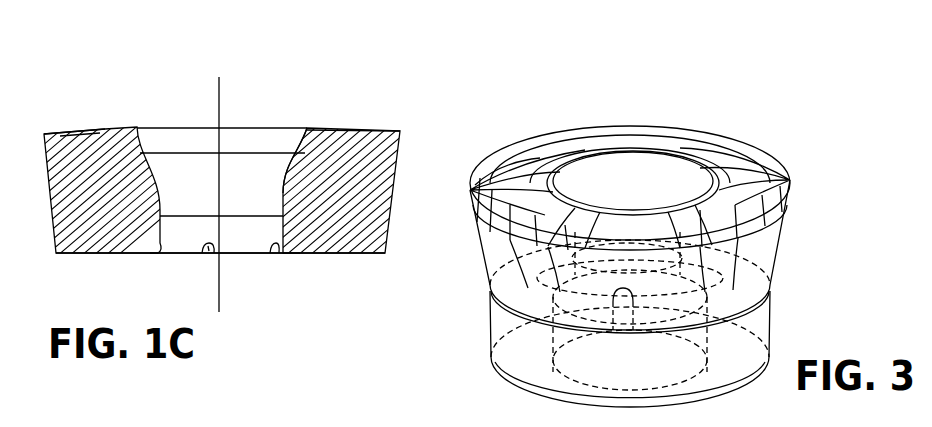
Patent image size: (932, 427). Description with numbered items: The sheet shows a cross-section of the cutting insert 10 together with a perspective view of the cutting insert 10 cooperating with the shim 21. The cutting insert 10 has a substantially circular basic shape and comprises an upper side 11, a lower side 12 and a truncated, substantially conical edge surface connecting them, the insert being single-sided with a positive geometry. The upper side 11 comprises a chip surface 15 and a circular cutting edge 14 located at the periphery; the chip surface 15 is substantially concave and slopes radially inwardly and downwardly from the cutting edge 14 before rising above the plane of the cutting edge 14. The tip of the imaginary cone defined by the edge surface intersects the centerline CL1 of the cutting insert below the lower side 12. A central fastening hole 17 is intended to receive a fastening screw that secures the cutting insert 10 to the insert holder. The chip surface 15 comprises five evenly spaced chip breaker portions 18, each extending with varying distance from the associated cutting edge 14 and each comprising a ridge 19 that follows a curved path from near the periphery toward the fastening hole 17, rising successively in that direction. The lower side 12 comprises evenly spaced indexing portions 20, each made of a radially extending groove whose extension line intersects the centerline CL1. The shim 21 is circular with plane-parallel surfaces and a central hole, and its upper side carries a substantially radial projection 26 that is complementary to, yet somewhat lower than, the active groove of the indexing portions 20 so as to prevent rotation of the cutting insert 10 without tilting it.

In FIG. 1C, the cutting insert 10 is at (140, 105).
In FIG. 3, the cutting insert 10 is at (742, 118).
In FIG. 1C, the centerline CL1 is at (215, 102).
In FIG. 1C, the upper side 11 is at (337, 127).
In FIG. 1C, the lower side 12 is at (322, 256).
In FIG. 1C, the circular cutting edge 14 is at (400, 131).
In FIG. 3, the circular cutting edge 14 is at (592, 126).
In FIG. 1C, the chip surface 15 is at (60, 134).
In FIG. 3, the chip surface 15 is at (603, 130).
In FIG. 1C, the fastening hole 17 is at (287, 182).
In FIG. 3, the chip breaker portion 18 is at (720, 152).
In FIG. 3, the ridge 19 is at (512, 165).
In FIG. 1C, the indexing portion 20 is at (207, 252).
In FIG. 3, the indexing portion 20 is at (600, 283).
In FIG. 1C, the shim 21 is at (228, 340).
In FIG. 3, the shim 21 is at (780, 319).
In FIG. 3, the projection 26 is at (590, 318).